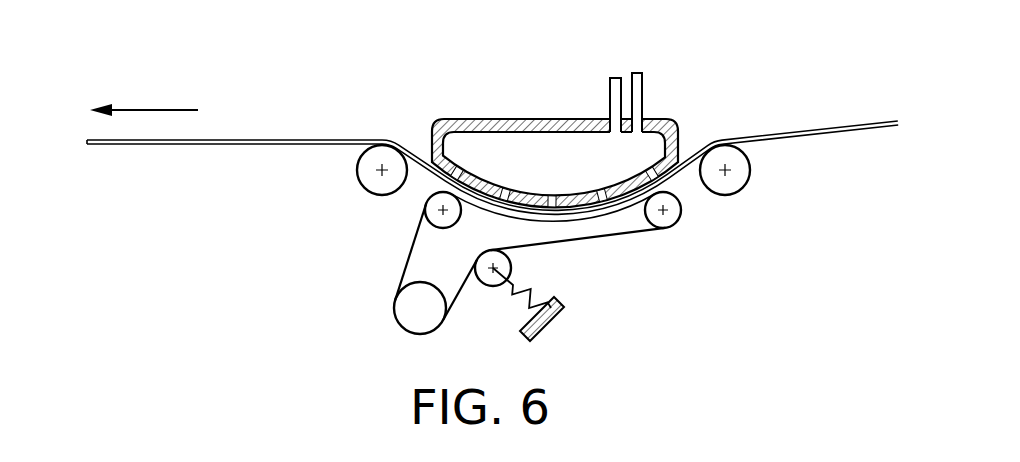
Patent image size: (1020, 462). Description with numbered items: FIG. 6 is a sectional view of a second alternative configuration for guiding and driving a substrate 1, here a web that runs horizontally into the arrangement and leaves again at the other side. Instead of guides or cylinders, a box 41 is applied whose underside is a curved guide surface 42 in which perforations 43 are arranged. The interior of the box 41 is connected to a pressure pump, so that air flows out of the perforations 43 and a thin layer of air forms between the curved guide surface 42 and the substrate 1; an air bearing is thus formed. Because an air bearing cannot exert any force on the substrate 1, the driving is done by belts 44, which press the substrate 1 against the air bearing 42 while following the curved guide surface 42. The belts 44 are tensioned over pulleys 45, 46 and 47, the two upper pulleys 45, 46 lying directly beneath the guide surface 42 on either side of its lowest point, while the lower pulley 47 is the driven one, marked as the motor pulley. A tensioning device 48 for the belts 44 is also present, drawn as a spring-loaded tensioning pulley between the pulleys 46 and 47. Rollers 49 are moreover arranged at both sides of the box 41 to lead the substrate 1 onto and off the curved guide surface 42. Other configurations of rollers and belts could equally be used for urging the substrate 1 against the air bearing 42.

The web 1 is at (265, 139).
The box 41 is at (490, 118).
The curved guide surface 42 is at (545, 200).
The perforations 43 is at (607, 193).
The belts 44 is at (405, 257).
The pulley 45 is at (425, 209).
The pulley 46 is at (681, 210).
The driven pulley 47 is at (395, 314).
The tensioning device 48 is at (509, 266).
The rollers 49 is at (357, 172).